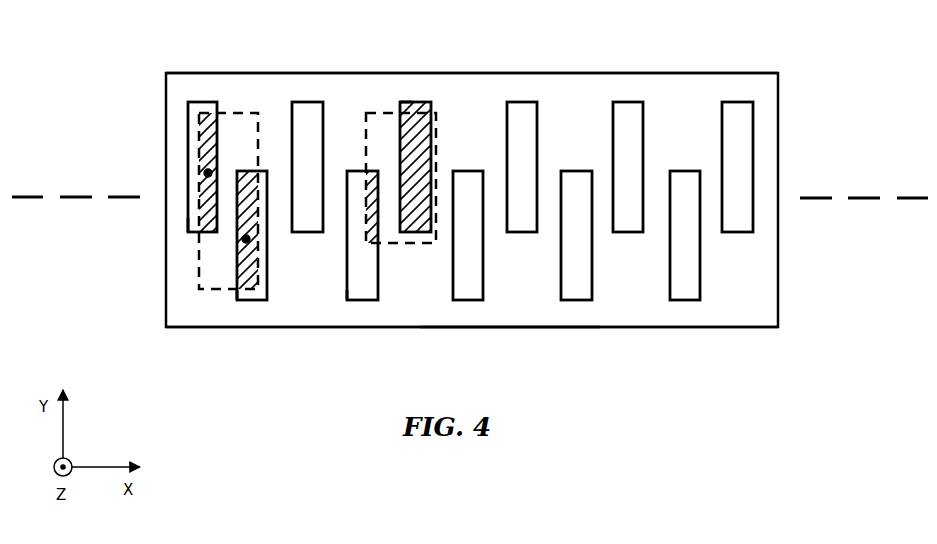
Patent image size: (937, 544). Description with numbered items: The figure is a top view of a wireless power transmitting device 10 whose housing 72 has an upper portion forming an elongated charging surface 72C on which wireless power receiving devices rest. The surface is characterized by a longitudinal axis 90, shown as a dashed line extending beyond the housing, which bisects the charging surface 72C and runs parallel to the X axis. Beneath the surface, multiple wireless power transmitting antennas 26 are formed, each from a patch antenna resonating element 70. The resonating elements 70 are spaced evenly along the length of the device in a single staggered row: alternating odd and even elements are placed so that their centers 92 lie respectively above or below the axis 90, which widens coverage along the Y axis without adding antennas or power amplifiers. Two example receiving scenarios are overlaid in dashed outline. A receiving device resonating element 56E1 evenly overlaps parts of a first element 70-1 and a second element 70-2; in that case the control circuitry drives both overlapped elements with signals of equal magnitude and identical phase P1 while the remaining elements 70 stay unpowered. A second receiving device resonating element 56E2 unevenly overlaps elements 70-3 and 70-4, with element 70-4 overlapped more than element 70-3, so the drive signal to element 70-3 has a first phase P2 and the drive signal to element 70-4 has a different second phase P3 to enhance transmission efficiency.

The wireless power transmitting device 10 is at (797, 80).
The wireless power transmitting antenna 26 is at (177, 93).
The antenna resonating element 70 is at (692, 291).
The first element 70-1 is at (197, 102).
The second element 70-2 is at (262, 300).
The element 70-3 is at (378, 280).
The element 70-4 is at (431, 102).
The resonating element 56E1 is at (245, 113).
The resonating element 56E2 is at (372, 112).
The housing 72 is at (530, 328).
The charging surface 72C is at (603, 315).
The longitudinal axis 90 is at (72, 197).
The centers 92 is at (206, 173).
The phase P1 is at (188, 219).
The first phase P2 is at (368, 300).
The second phase P3 is at (408, 102).